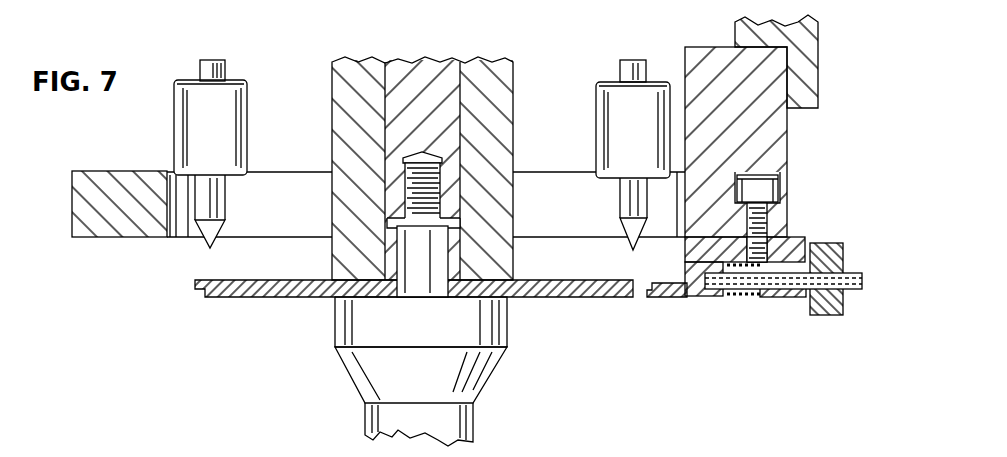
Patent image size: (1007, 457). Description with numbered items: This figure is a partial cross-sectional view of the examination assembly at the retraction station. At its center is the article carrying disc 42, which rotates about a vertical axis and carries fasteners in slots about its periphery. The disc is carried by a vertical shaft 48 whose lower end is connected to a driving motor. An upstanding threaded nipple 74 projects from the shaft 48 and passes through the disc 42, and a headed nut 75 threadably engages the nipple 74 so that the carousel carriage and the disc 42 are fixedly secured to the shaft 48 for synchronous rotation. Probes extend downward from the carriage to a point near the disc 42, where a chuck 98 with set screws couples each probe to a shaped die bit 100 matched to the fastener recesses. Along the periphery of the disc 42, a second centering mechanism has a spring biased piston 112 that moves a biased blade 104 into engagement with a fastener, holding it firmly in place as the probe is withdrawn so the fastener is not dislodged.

The article carrying disc 42 is at (627, 297).
The vertical shaft 48 is at (360, 377).
The threaded nipple 74 is at (432, 267).
The headed nut 75 is at (445, 97).
The chuck 98 is at (617, 132).
The die bit 100 is at (627, 197).
The biased blade 104 is at (687, 297).
The spring biased piston 112 is at (767, 288).